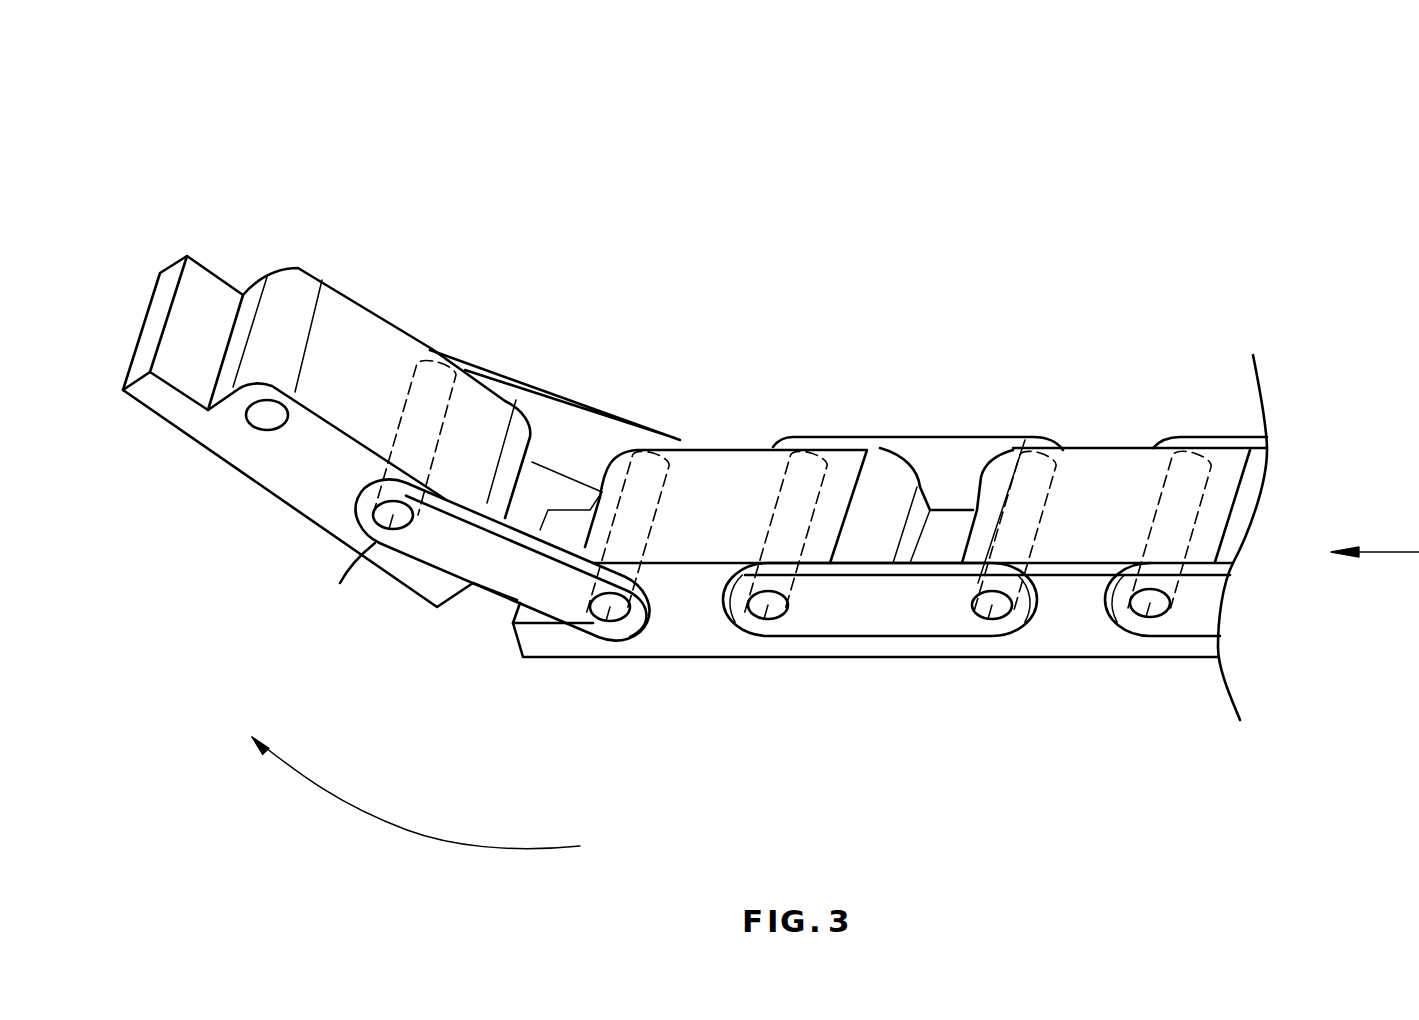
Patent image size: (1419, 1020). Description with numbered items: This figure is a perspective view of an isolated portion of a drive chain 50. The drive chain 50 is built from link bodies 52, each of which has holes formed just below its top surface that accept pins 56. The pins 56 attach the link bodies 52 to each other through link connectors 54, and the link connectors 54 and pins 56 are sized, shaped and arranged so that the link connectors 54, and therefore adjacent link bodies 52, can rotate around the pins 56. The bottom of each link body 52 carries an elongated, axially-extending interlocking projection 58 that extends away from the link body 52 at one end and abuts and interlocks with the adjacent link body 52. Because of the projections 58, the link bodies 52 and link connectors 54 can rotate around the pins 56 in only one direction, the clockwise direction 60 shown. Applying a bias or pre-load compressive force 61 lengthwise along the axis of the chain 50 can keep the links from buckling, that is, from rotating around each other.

The drive chain 50 is at (1248, 78).
The link body 52 is at (381, 312).
The link connector 54 is at (560, 397).
The pin 56 is at (388, 520).
The interlocking projection 58 is at (155, 320).
The clockwise direction 60 is at (337, 803).
The pre-load compressive force 61 is at (1387, 552).